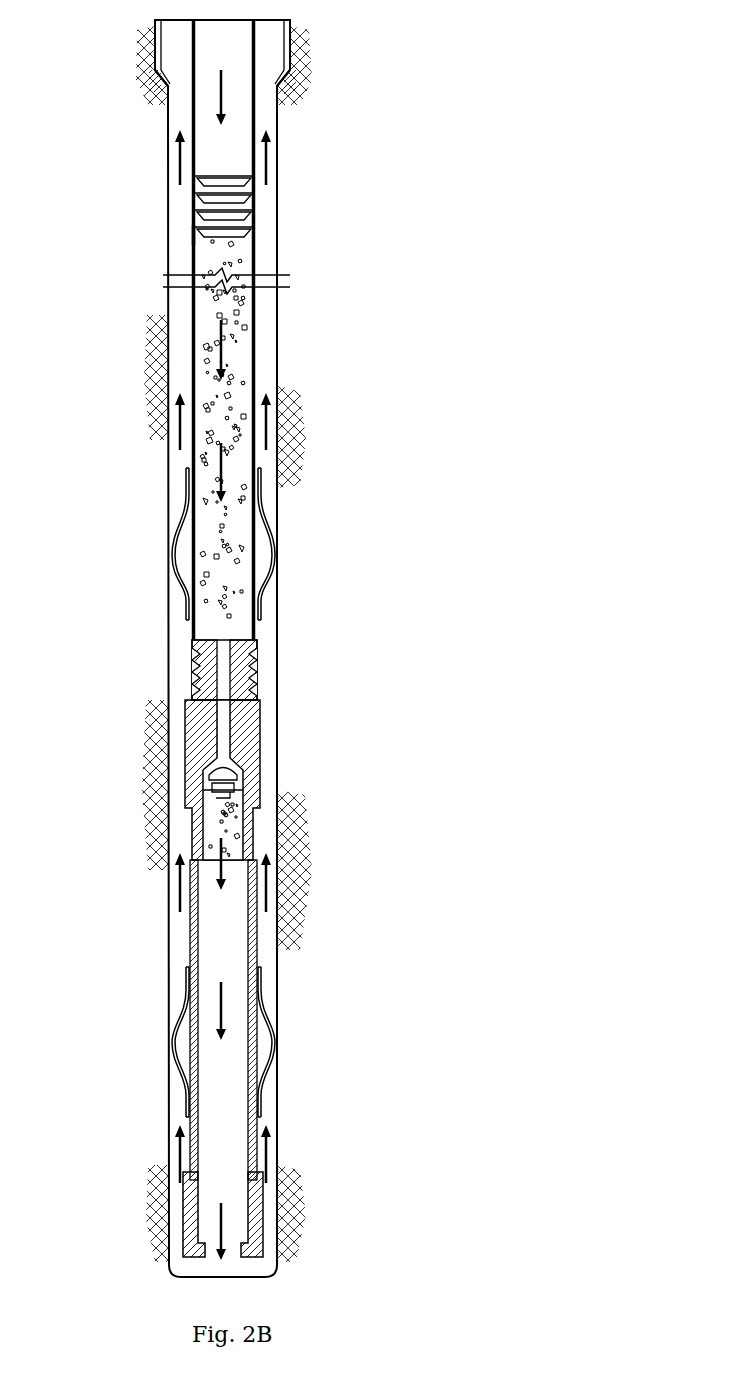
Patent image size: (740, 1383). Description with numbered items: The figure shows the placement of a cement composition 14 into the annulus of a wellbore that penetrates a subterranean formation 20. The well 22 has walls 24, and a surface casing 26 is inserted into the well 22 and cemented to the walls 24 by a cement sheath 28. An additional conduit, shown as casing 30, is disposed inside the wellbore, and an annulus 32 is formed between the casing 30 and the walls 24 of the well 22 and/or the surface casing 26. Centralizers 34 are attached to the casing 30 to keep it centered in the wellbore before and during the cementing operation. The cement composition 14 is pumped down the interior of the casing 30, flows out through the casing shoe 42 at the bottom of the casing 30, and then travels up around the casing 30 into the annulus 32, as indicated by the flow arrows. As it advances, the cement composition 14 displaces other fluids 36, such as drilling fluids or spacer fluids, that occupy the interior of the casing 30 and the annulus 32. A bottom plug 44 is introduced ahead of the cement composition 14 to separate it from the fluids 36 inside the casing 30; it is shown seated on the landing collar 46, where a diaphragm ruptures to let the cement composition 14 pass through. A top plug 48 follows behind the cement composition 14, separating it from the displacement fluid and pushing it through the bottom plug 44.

The cement composition 14 is at (222, 333).
The subterranean formation 20 is at (421, 668).
The well 22 is at (290, 487).
The walls 24 is at (263, 200).
The surface casing 26 is at (273, 43).
The cement sheath 28 is at (286, 86).
The casing 30 is at (256, 375).
The annulus 32 is at (181, 458).
The centralizers 34 is at (183, 1010).
The fluids 36 is at (222, 854).
The casing shoe 42 is at (183, 1225).
The bottom plug 44 is at (193, 662).
The landing collar 46 is at (187, 752).
The top plug 48 is at (192, 235).